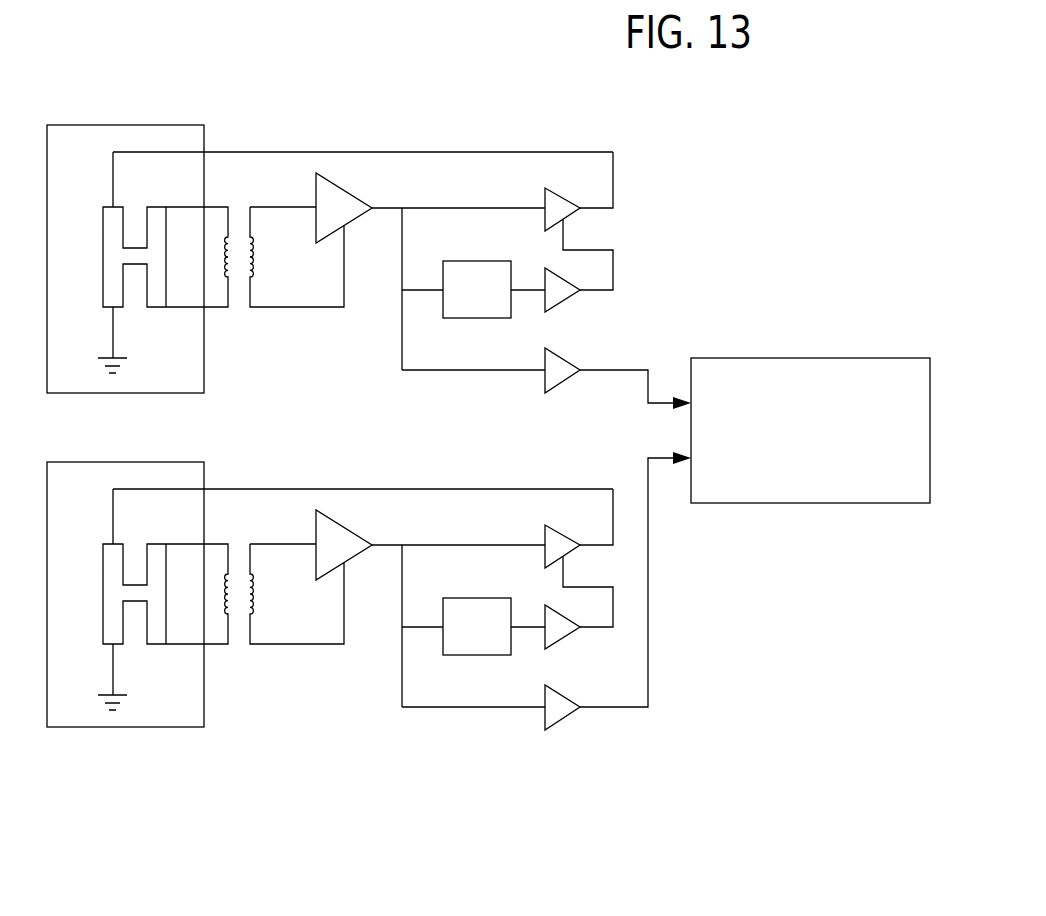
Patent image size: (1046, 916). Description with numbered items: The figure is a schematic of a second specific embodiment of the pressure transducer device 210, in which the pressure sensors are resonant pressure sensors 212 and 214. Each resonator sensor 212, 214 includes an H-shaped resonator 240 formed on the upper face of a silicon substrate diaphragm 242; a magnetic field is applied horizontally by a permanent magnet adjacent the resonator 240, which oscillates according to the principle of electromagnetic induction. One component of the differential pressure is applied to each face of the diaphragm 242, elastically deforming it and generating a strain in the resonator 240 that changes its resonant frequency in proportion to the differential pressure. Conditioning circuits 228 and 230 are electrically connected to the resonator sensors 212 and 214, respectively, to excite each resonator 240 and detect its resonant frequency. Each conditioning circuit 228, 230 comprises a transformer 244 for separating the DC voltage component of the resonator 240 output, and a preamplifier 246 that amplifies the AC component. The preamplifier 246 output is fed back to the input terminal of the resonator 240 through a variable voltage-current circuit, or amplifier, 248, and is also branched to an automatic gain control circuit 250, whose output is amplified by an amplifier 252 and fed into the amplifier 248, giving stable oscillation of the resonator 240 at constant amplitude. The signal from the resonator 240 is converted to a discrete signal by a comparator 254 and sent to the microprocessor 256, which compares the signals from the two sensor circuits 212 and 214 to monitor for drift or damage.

The pressure transducer device 210 is at (806, 751).
The resonant pressure sensor 212 is at (245, 115).
The resonant pressure sensor 214 is at (234, 734).
The conditioning circuit 228 is at (659, 143).
The conditioning circuit 230 is at (724, 688).
The H-shaped resonator 240 is at (158, 307).
The silicon substrate diaphragm 242 is at (108, 125).
The transformer 244 is at (239, 285).
The preamplifier 246 is at (352, 192).
The variable voltage-current circuit (amplifier) 248 is at (565, 184).
The automatic gain control circuit 250 is at (482, 245).
The amplifier 252 is at (563, 300).
The comparator 254 is at (558, 380).
The microprocessor 256 is at (772, 358).